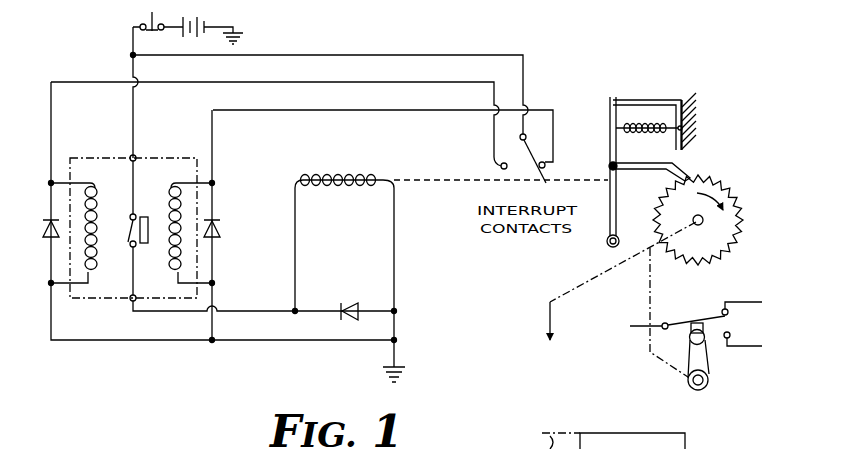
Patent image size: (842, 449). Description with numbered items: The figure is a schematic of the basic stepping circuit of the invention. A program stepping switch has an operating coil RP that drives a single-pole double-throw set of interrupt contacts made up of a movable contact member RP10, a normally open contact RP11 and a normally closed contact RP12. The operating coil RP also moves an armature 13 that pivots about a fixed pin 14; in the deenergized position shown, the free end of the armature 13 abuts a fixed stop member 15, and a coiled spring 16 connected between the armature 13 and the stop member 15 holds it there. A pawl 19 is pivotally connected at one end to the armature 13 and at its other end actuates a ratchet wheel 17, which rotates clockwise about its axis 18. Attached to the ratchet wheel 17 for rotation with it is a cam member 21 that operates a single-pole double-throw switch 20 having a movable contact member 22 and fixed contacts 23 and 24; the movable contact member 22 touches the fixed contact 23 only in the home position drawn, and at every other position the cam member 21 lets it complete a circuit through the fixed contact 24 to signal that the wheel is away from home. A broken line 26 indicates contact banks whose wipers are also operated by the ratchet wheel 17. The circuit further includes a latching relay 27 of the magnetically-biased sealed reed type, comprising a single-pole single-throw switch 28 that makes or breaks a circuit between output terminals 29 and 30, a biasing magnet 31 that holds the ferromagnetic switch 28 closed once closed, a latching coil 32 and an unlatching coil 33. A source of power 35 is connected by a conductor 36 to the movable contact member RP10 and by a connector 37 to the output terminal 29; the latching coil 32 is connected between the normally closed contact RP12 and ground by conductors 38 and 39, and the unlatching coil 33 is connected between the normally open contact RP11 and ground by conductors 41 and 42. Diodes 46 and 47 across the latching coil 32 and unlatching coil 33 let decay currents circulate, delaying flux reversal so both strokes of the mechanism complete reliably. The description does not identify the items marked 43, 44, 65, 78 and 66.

The source of power 35 is at (206, 18).
The conductor 36 is at (388, 54).
The conductor 41 is at (299, 70).
The conductor 38 is at (330, 99).
The connector 37 is at (133, 118).
The latching relay 27 is at (82, 158).
The output terminal 29 is at (136, 155).
The output terminal 30 is at (136, 294).
The latching coil 32 is at (180, 195).
The unlatching coil 33 is at (97, 208).
The biasing magnet 31 is at (145, 214).
The single-pole single-throw switch 28 is at (128, 240).
The diode 46 is at (220, 222).
The diode 47 is at (47, 240).
The conductor 39 is at (213, 290).
The diode 43 is at (266, 310).
The conductor 44 is at (396, 252).
The conductor 42 is at (198, 343).
The operating coil RP is at (350, 178).
The movable contact member RP10 is at (531, 146).
The normally open contact RP11 is at (502, 163).
The normally closed contact RP12 is at (546, 160).
The fixed stop member 15 is at (650, 100).
The coiled spring 16 is at (636, 131).
The armature 13 is at (616, 212).
The fixed pin 14 is at (610, 246).
The pawl 19 is at (684, 169).
The ratchet wheel 17 is at (738, 193).
The axis 18 is at (704, 221).
The broken line 26 is at (562, 302).
The cam member 21 is at (712, 366).
The movable contact member 22 is at (688, 323).
The fixed contact 23 is at (722, 307).
The single-pole double-throw switch 20 is at (774, 284).
The fixed contact 24 is at (730, 334).
The contact bank 65 is at (607, 448).
The wiper 78 is at (641, 446).
The contact bank 66 is at (724, 448).